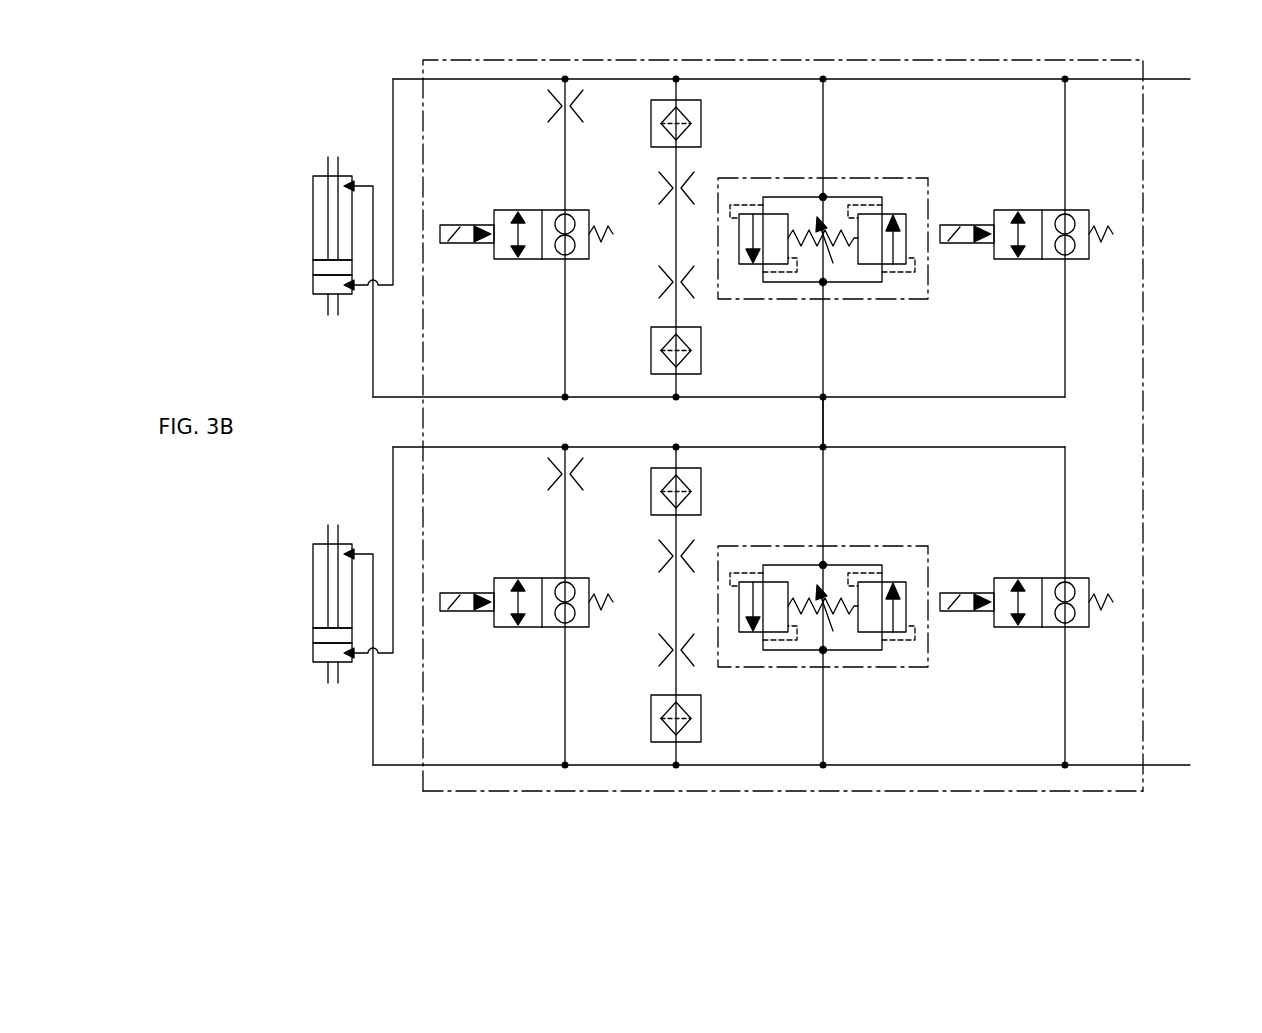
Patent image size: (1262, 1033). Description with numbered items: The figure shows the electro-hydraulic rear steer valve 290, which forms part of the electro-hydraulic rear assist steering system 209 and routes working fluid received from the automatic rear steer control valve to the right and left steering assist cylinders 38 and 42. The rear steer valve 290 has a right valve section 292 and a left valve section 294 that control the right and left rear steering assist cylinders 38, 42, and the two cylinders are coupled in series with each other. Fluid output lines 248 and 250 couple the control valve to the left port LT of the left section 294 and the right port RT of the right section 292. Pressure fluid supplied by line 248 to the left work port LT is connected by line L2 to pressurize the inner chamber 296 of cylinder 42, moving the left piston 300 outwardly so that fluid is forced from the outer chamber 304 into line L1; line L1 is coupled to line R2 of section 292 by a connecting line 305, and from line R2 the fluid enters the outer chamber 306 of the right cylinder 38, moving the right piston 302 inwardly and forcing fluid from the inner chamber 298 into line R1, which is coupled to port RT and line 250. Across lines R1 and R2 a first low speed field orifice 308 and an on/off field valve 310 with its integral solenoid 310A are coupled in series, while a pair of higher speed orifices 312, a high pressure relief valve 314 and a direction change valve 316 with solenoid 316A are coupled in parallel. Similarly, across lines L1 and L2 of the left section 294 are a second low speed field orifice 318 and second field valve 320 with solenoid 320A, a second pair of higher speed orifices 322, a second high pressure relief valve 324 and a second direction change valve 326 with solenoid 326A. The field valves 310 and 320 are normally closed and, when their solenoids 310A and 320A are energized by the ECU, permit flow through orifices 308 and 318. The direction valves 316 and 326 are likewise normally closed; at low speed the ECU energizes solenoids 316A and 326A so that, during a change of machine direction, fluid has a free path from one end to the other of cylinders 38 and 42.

The left rear steering assist cylinder 42 is at (294, 237).
The outer chamber 304 is at (318, 186).
The left piston 300 is at (318, 267).
The inner chamber 296 is at (318, 285).
The right rear steering assist cylinder 38 is at (294, 605).
The inner chamber 298 is at (318, 554).
The right piston 302 is at (318, 636).
The outer chamber 306 is at (318, 653).
The fluid output line 248 is at (1172, 80).
The fluid output line 250 is at (1175, 765).
The rear steer valve 290 is at (672, 795).
The electro-hydraulic rear assist steering system 209 is at (952, 800).
The right valve section 292 is at (624, 432).
The left valve section 294 is at (758, 400).
The connecting line 305 is at (825, 422).
The second low speed field orifice 318 is at (577, 106).
The second on/off field valve 320 is at (585, 260).
The solenoid 320A is at (460, 244).
The second pair of higher speed orifices 322 is at (688, 190).
The second high pressure relief valve 324 is at (843, 178).
The second direction change valve 326 is at (1042, 208).
The solenoid 326A is at (958, 245).
The first low speed field orifice 308 is at (577, 474).
The on/off field valve 310 is at (585, 628).
The solenoid 310A is at (460, 612).
The pair of higher speed orifices 312 is at (688, 558).
The high pressure relief valve 314 is at (843, 546).
The direction change valve 316 is at (1042, 577).
The solenoid 316A is at (958, 613).
The line L1 is at (373, 383).
The line L2 is at (393, 130).
The left work port LT is at (1067, 82).
The line R1 is at (373, 745).
The line R2 is at (393, 500).
The right port RT is at (1067, 762).